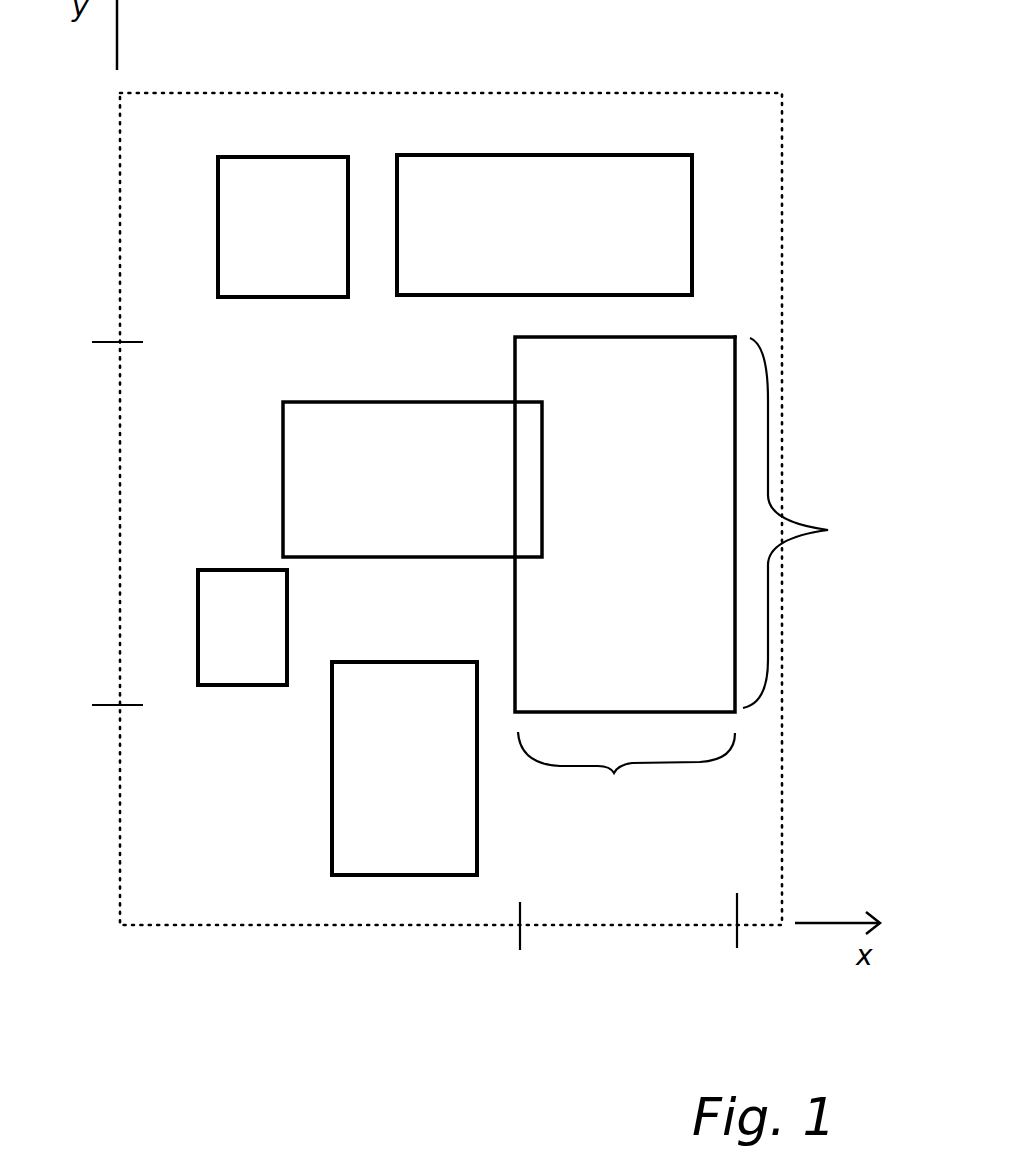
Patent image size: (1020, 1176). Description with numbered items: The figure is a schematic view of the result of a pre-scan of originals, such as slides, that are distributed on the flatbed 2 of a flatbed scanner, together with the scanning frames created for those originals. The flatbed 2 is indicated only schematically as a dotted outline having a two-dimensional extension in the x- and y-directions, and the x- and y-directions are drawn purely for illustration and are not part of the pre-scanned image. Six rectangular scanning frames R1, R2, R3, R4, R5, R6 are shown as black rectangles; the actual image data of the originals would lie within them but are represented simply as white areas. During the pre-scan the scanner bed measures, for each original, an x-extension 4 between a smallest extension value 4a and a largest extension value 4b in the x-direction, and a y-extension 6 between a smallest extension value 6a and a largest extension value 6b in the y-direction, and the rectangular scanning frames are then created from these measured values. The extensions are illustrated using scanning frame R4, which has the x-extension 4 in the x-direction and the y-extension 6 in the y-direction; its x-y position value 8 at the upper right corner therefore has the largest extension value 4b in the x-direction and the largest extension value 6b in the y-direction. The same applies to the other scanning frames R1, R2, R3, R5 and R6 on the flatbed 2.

The flatbed 2 is at (238, 904).
The x-extension 4 is at (626, 779).
The smallest extension value in the x-direction 4a is at (517, 951).
The largest extension value in the x-direction 4b is at (738, 944).
The y-extension 6 is at (801, 523).
The smallest extension value in the y-direction 6a is at (90, 712).
The largest extension value in the y-direction 6b is at (89, 344).
The x-y position value 8 is at (742, 333).
The scanning frame R1 is at (283, 227).
The scanning frame R2 is at (544, 225).
The scanning frame R3 is at (412, 479).
The scanning frame R4 is at (625, 524).
The scanning frame R5 is at (242, 627).
The scanning frame R6 is at (404, 768).